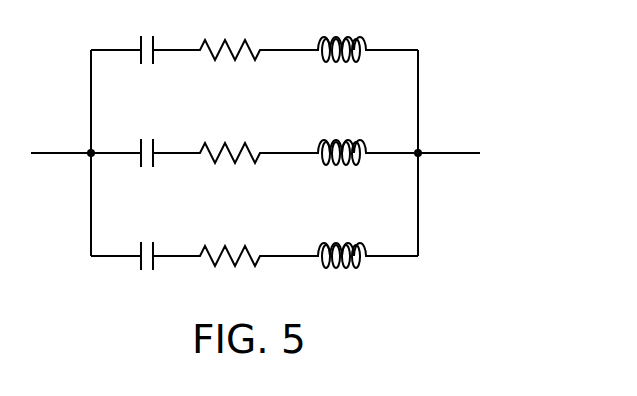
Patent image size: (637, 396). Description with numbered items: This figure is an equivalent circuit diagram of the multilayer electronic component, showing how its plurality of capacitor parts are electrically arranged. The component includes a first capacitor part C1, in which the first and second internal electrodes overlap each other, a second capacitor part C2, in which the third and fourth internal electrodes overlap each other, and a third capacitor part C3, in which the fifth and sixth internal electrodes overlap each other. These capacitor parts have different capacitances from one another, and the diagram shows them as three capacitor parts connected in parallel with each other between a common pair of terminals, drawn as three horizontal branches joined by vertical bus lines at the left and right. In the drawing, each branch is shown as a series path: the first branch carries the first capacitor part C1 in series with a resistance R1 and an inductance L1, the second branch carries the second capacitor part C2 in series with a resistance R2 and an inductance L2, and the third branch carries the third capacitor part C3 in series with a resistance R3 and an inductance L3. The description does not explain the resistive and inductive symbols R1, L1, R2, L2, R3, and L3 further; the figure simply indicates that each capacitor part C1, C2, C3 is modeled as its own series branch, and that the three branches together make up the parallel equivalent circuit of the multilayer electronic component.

The first capacitor part C1 is at (144, 35).
The first resistor R1 is at (257, 33).
The first inductor L1 is at (367, 34).
The second capacitor part C2 is at (144, 138).
The second resistor R2 is at (257, 136).
The second inductor L2 is at (367, 137).
The third capacitor part C3 is at (144, 241).
The third resistor R3 is at (257, 239).
The third inductor L3 is at (367, 240).